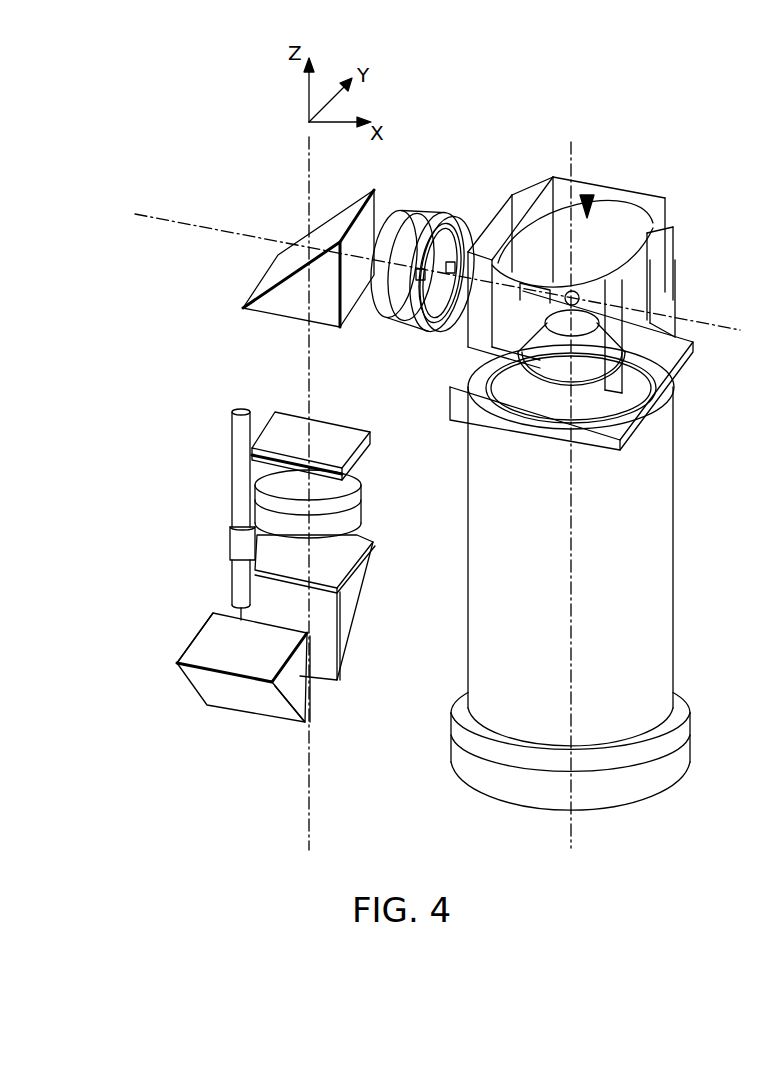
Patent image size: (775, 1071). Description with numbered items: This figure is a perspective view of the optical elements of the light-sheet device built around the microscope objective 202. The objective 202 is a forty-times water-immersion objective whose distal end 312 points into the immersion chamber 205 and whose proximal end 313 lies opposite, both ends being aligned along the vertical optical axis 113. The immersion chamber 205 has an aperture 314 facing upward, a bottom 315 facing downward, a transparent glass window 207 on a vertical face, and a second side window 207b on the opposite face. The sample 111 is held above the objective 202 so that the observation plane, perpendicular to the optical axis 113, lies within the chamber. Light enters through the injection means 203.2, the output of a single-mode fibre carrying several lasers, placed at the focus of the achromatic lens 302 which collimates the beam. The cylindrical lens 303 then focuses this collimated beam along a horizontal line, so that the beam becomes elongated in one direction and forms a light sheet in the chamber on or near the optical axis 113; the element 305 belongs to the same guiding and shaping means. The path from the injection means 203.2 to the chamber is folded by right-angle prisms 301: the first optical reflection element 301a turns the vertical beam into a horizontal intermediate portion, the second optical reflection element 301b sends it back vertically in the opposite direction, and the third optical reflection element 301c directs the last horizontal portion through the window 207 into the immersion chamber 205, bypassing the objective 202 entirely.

The optical axis 113 is at (568, 150).
The sample 111 is at (577, 292).
The aperture 314 is at (588, 196).
The immersion chamber 205 is at (627, 227).
The window 207 is at (507, 213).
The second side window 207b is at (647, 233).
The bottom 315 is at (583, 323).
The distal end 312 is at (563, 330).
The objective 202 is at (495, 602).
The proximal end 313 is at (575, 725).
The shaping means element 305 is at (407, 312).
The right-angle prisms 301 is at (262, 465).
The third optical reflection element 301c is at (330, 228).
The first optical reflection element 301a is at (347, 633).
The second optical reflection element 301b is at (213, 655).
The cylindrical lens 303 is at (360, 453).
The achromatic lens 302 is at (348, 508).
The injection means 203.2 is at (240, 582).